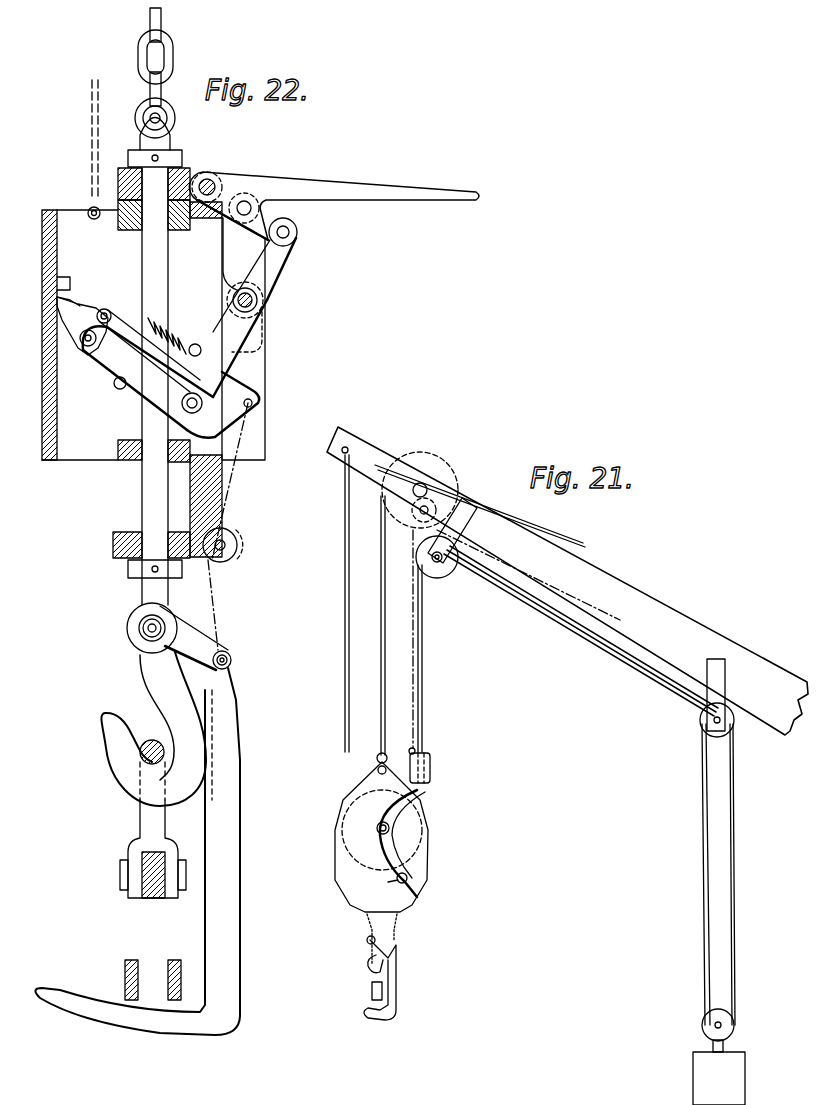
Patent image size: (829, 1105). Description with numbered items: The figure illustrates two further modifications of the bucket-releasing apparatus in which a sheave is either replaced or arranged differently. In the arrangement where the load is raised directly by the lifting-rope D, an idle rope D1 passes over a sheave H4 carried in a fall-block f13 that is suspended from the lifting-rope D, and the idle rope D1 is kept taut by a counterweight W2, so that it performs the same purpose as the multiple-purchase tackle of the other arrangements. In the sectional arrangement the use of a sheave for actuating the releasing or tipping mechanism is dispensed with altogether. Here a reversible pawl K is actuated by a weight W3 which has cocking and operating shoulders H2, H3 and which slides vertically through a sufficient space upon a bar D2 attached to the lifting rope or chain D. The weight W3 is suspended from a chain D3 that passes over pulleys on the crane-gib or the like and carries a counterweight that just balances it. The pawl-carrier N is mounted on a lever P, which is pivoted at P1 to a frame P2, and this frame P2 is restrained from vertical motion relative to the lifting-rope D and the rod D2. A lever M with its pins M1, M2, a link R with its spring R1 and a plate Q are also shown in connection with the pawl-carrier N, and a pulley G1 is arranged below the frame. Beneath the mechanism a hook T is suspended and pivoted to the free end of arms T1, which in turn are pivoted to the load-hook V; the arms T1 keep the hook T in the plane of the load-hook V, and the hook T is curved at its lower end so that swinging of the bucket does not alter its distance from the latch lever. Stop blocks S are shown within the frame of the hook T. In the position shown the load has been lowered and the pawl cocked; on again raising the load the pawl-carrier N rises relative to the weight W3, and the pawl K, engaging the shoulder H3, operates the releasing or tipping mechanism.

In FIG. 22, the lifting rope D is at (163, 56).
In FIG. 21, the lifting rope D is at (380, 672).
In FIG. 21, the idle rope D1 is at (346, 660).
In FIG. 22, the bar D2 is at (155, 386).
In FIG. 22, the chain D3 is at (96, 104).
In FIG. 22, the lever M is at (374, 192).
In FIG. 22, the lever pivot pin M1 is at (210, 180).
In FIG. 22, the lever pin M2 is at (255, 202).
In FIG. 22, the lever P is at (272, 268).
In FIG. 22, the pivot P1 is at (252, 307).
In FIG. 22, the frame P2 is at (218, 254).
In FIG. 22, the cocking shoulder H2 is at (58, 283).
In FIG. 22, the operating shoulder H3 is at (64, 296).
In FIG. 21, the sheave H4 is at (346, 830).
In FIG. 22, the weight W3 is at (153, 363).
In FIG. 21, the counterweight W2 is at (719, 1072).
In FIG. 22, the reversible pawl K is at (62, 316).
In FIG. 22, the link R is at (112, 318).
In FIG. 22, the spring R1 is at (180, 322).
In FIG. 22, the pawl-carrier N is at (100, 362).
In FIG. 22, the plate Q is at (220, 466).
In FIG. 22, the chain G1 is at (222, 495).
In FIG. 22, the hook T is at (137, 851).
In FIG. 22, the arms T1 is at (202, 640).
In FIG. 22, the load-hook V is at (153, 775).
In FIG. 22, the lever S is at (168, 980).
In FIG. 21, the fall-block f13 is at (348, 870).